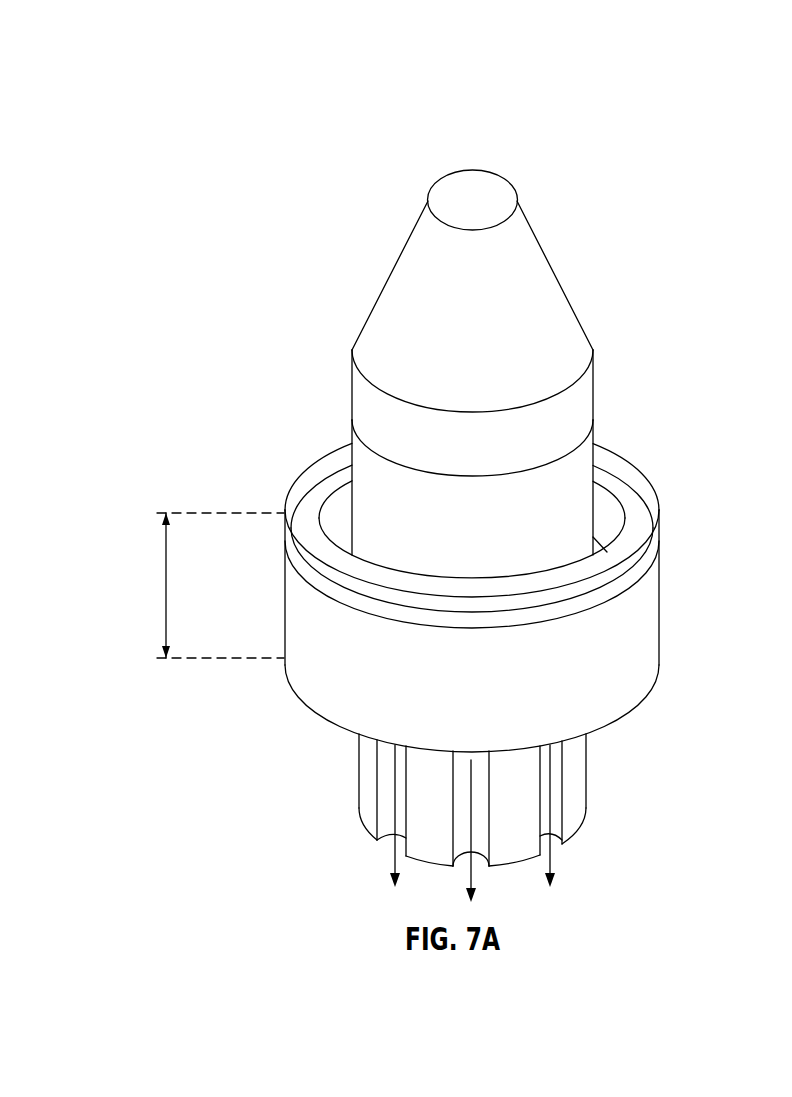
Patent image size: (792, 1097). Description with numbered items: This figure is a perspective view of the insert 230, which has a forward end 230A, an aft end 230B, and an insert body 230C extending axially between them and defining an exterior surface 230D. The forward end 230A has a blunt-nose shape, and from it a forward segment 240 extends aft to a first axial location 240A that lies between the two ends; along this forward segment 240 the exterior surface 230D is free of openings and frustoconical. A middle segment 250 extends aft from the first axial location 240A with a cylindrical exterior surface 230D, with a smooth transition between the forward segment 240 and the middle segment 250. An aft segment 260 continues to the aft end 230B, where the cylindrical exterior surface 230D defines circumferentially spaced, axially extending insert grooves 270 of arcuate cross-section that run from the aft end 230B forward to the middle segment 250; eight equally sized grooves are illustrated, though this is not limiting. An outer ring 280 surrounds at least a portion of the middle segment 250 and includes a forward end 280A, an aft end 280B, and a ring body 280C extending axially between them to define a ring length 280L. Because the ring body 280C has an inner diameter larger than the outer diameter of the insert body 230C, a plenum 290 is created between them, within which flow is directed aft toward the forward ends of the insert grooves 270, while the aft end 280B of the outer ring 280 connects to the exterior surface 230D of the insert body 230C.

The insert 230 is at (227, 103).
The forward end 230A is at (472, 192).
The aft end 230B is at (363, 826).
The insert body 230C is at (582, 473).
The exterior surface 230D is at (377, 543).
The forward segment 240 is at (393, 277).
The first axial location 240A is at (582, 400).
The middle segment 250 is at (582, 523).
The aft segment 260 is at (594, 781).
The insert grooves 270 is at (562, 849).
The outer ring 280 is at (638, 653).
The forward end of the outer ring 280A is at (622, 572).
The aft end of the outer ring 280B is at (630, 707).
The ring body 280C is at (603, 635).
The ring length 280L is at (163, 583).
The plenum 290 is at (338, 518).